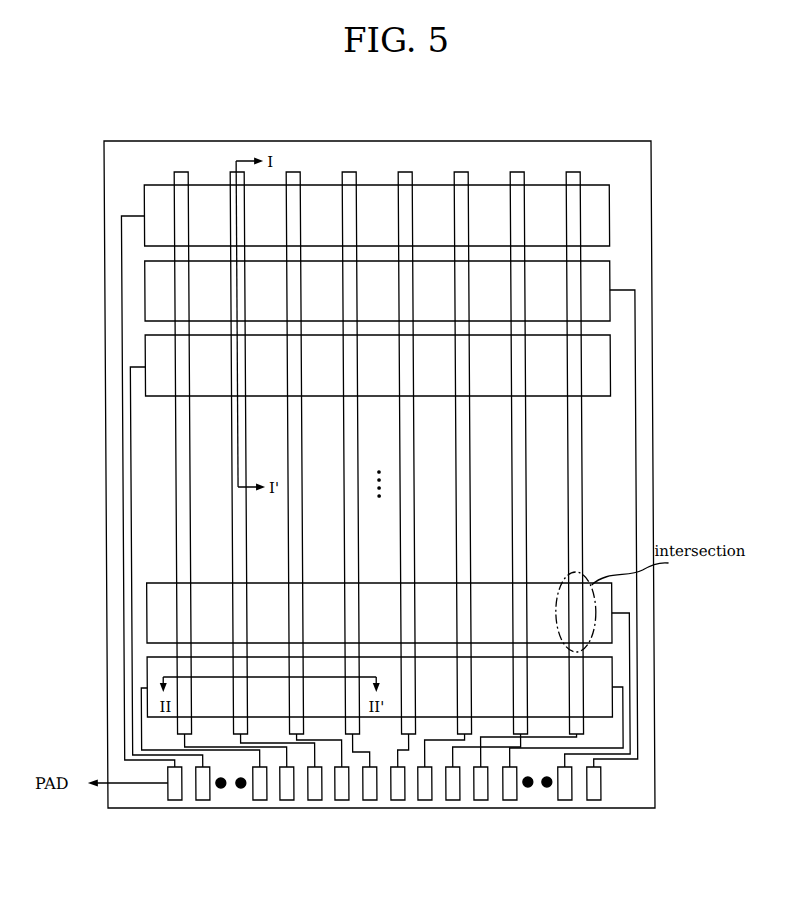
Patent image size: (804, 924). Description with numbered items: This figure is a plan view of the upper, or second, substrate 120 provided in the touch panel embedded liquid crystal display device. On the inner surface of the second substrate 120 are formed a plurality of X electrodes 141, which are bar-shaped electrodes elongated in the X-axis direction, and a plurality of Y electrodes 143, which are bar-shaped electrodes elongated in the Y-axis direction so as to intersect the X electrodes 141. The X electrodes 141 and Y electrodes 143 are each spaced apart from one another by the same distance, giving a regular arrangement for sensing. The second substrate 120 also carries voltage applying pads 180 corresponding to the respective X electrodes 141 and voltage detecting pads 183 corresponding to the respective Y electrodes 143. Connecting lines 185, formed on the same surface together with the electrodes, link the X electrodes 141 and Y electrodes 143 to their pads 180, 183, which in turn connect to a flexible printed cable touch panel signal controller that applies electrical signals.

The second substrate 120 is at (651, 167).
The X electrodes 141 is at (609, 212).
The Y electrodes 143 is at (571, 172).
The voltage applying pads 180 is at (164, 803).
The voltage detecting pads 183 is at (276, 803).
The connecting lines 185 is at (634, 742).